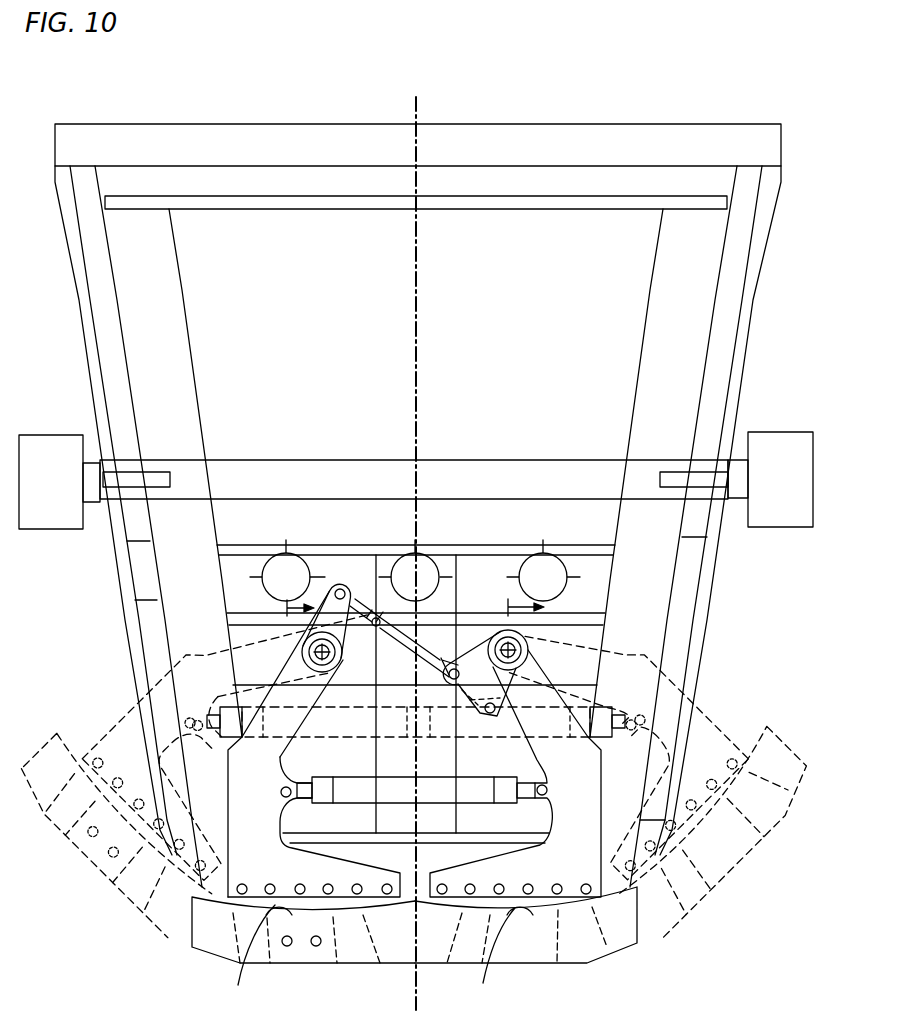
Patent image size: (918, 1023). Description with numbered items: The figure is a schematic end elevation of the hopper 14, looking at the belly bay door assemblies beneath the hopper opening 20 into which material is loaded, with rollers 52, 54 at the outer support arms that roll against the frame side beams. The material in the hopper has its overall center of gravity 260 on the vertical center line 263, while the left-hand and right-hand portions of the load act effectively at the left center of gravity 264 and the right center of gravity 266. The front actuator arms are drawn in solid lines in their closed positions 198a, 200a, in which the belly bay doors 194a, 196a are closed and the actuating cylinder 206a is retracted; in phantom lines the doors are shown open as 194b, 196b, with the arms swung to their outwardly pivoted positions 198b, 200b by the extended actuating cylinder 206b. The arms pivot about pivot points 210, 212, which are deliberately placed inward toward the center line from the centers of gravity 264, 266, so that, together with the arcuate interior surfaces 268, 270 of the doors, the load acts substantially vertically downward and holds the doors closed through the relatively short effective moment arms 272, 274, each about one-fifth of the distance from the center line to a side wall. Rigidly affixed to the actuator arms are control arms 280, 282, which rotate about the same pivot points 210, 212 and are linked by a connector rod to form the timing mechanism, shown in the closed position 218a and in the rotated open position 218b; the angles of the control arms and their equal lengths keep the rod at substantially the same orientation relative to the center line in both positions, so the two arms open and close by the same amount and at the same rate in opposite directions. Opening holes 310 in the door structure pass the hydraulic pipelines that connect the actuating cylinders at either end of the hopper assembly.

The hopper 14 is at (238, 98).
The hopper opening 20 is at (313, 113).
The longitudinal centerline 263 is at (422, 105).
The roller 52 is at (57, 448).
The roller 54 is at (770, 447).
The right center of gravity 266 is at (268, 566).
The center of gravity 260 is at (430, 560).
The left center of gravity 264 is at (560, 560).
The effective moment arm 274 is at (280, 609).
The effective moment arm 272 is at (512, 605).
The pivot point 212 is at (292, 652).
The pivot point 210 is at (538, 650).
The control arm 282 is at (336, 588).
The timing mechanism 218a is at (352, 593).
The control arm 280 is at (538, 730).
The timing mechanism 218b is at (491, 725).
The front actuator arm in closed position 200a is at (314, 744).
The front actuator arm in closed position 198a is at (515, 773).
The actuating cylinder in retracted position 206a is at (387, 802).
The actuating cylinder in extended position 206b is at (365, 733).
The right belly bay door in closed position 196a is at (210, 937).
The left belly bay door in closed position 194a is at (532, 963).
The arcuate interior surface 270 is at (255, 961).
The arcuate interior surface 268 is at (498, 960).
The opening holes 310 is at (289, 947).
The front actuator arm in open position 200b is at (249, 711).
The right belly bay door in open position 196b is at (112, 835).
The front actuator arm in open position 198b is at (615, 732).
The left belly bay door in open position 194b is at (715, 836).